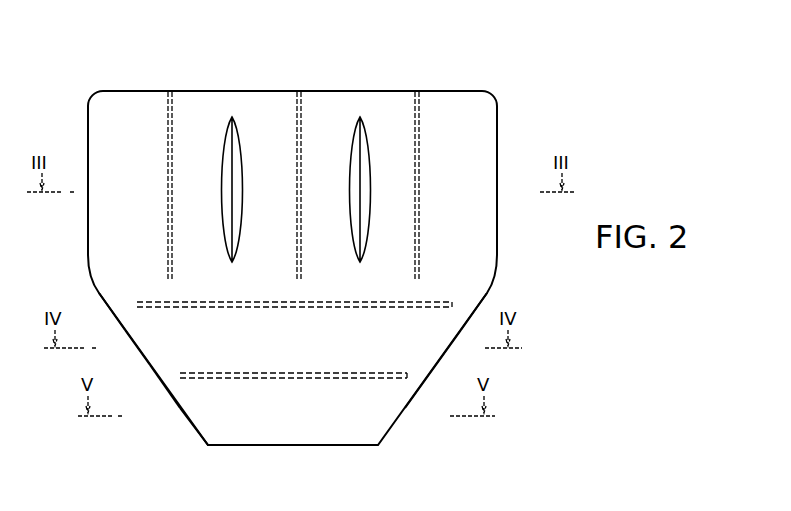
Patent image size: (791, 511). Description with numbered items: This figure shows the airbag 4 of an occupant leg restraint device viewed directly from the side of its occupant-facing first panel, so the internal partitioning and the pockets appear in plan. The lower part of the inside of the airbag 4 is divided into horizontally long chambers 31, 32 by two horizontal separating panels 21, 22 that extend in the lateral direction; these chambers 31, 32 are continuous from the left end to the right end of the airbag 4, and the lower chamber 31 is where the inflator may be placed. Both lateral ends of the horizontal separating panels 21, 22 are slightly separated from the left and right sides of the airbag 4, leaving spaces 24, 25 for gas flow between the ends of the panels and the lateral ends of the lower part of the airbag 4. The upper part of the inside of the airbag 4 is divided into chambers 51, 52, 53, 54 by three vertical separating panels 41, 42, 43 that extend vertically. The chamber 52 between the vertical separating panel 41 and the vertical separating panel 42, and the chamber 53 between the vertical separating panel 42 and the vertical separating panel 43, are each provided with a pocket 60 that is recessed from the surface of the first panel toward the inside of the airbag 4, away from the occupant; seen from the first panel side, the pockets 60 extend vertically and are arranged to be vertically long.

The airbag 4 is at (560, 68).
The horizontal separating panel 21 is at (290, 380).
The horizontal separating panel 22 is at (290, 309).
The space for gas flow 24 is at (172, 374).
The space for gas flow 25 is at (137, 303).
The lower chamber 31 is at (212, 416).
The chamber 32 is at (158, 333).
The vertical separating panel 41 is at (163, 217).
The vertical separating panel 42 is at (292, 217).
The vertical separating panel 43 is at (410, 226).
The chamber 51 is at (134, 110).
The chamber 52 is at (213, 110).
The chamber 53 is at (338, 110).
The chamber 54 is at (457, 110).
The pocket 60 is at (246, 118).